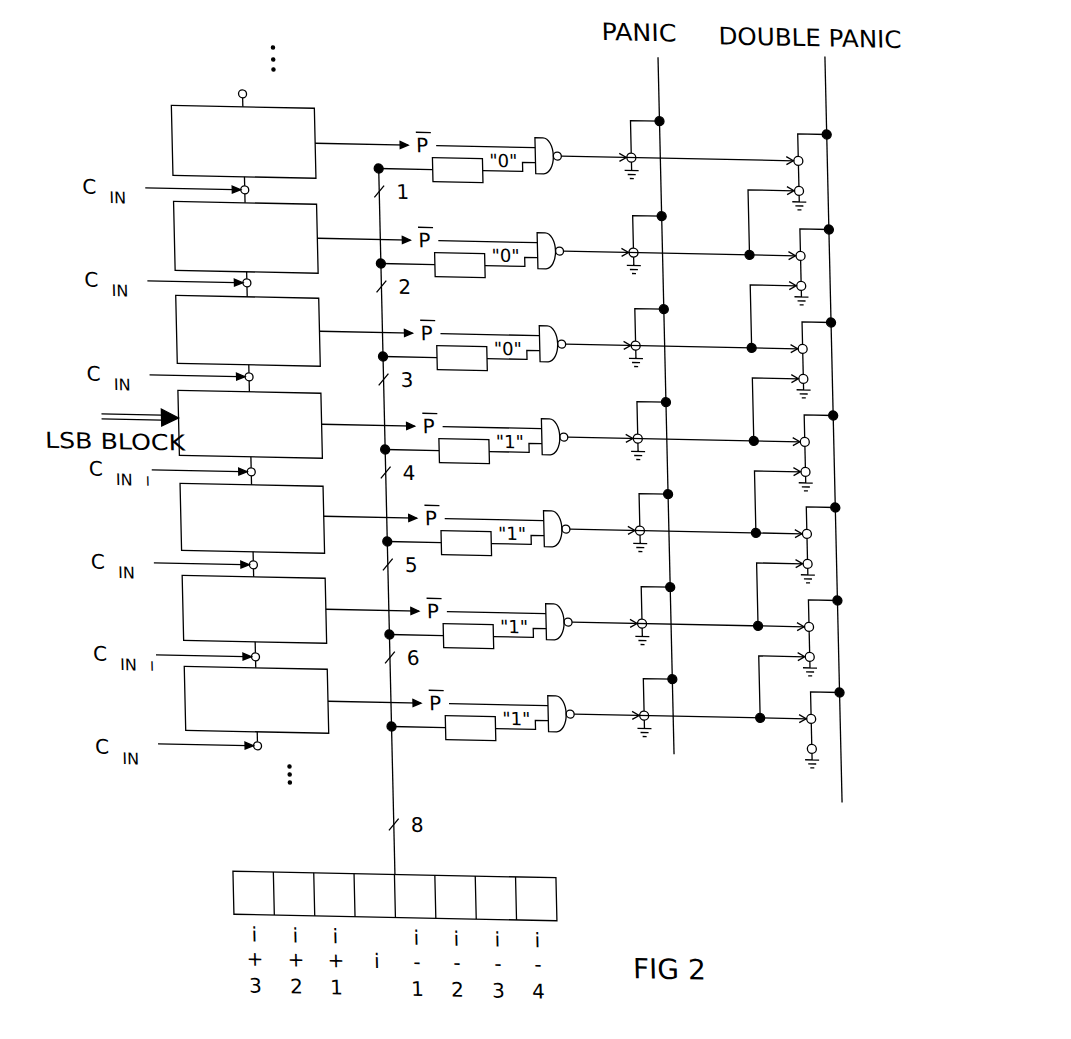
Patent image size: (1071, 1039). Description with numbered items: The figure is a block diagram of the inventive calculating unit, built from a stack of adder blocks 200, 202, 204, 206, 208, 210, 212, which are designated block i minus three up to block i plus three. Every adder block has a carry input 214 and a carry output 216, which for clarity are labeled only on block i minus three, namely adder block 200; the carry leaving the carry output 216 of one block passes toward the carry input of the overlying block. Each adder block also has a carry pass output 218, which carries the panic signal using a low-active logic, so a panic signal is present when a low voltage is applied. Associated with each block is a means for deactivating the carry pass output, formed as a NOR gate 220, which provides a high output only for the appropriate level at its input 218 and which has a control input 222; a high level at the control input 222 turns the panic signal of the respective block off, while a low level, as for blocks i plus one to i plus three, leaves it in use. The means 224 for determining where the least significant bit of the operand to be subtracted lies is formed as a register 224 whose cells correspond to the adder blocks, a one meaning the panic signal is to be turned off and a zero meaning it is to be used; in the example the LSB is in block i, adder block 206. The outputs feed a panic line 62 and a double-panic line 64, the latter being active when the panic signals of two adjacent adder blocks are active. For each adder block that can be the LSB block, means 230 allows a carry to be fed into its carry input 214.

The adder block 212 is at (169, 144).
The adder block 210 is at (169, 239).
The adder block 208 is at (169, 334).
The adder block 206 is at (312, 446).
The adder block 204 is at (169, 520).
The adder block 202 is at (169, 614).
The adder block 200 is at (169, 700).
The carry output 216 is at (244, 661).
The carry input 214 is at (247, 741).
The carry pass output 218 is at (329, 698).
The means for feeding a carry 230 is at (163, 742).
The control input 222 is at (405, 720).
The NOR gate 220 is at (540, 712).
The panic line 62 is at (658, 85).
The double-panic line 64 is at (825, 91).
The means for determining the LSB block 224 is at (536, 867).